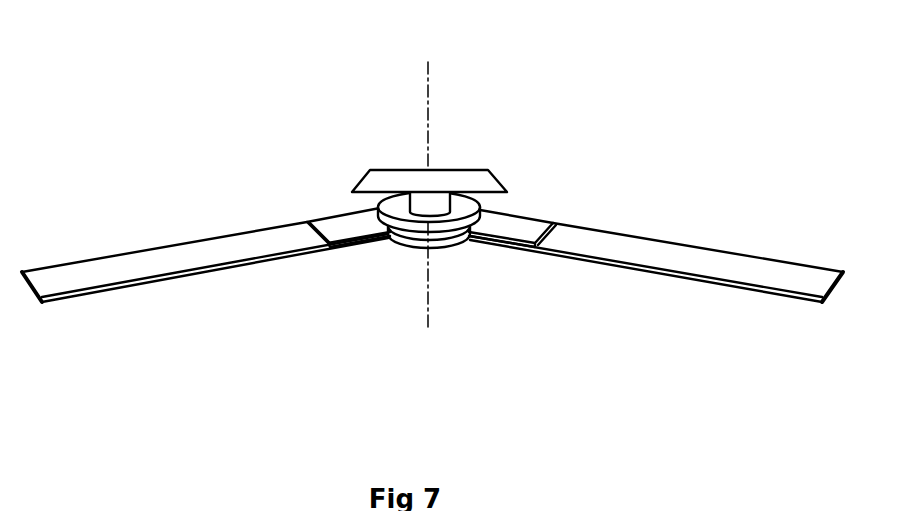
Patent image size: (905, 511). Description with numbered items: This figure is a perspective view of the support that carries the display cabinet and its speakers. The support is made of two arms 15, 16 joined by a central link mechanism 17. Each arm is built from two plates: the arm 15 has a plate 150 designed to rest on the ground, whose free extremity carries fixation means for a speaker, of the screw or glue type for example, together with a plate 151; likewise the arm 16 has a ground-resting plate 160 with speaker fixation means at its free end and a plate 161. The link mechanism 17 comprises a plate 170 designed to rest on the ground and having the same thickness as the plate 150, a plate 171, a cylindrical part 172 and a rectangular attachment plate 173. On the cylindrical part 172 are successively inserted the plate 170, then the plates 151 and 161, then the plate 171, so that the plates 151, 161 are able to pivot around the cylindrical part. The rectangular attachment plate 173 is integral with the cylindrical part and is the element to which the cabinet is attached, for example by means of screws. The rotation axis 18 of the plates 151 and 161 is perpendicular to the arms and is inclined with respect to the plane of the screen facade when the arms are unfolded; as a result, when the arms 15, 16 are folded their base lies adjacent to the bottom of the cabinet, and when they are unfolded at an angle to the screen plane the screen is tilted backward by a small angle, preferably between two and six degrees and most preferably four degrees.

The arm 15 is at (656, 263).
The arm 16 is at (206, 270).
The link mechanism 17 is at (447, 247).
The rotation axis 18 is at (433, 110).
The plate 150 is at (740, 272).
The plate 151 is at (522, 228).
The plate 160 is at (108, 272).
The plate 161 is at (347, 228).
The plate 170 is at (430, 248).
The plate 171 is at (474, 242).
The cylindrical part 172 is at (397, 171).
The rectangular attachment plate 173 is at (470, 178).